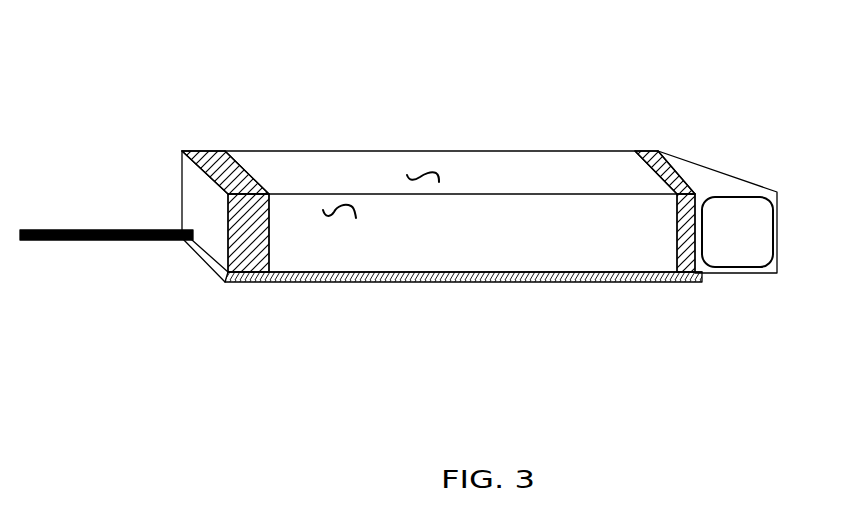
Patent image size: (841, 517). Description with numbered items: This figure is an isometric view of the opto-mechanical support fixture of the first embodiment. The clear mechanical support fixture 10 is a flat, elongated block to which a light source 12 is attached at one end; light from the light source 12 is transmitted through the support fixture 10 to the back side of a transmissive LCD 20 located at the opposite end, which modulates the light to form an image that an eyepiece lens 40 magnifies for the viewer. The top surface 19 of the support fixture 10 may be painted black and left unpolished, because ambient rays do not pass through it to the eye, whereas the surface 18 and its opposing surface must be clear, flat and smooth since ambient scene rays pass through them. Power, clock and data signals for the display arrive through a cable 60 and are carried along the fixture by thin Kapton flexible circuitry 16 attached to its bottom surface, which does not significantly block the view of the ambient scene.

The clear mechanical support fixture 10 is at (551, 171).
The light source 12 is at (205, 211).
The Kapton flexible circuitry 16 is at (333, 282).
The surface 18 is at (340, 210).
The top surface 19 is at (429, 171).
The transmissive LCD 20 is at (650, 163).
The lens 40 is at (753, 252).
The cable 60 is at (87, 228).